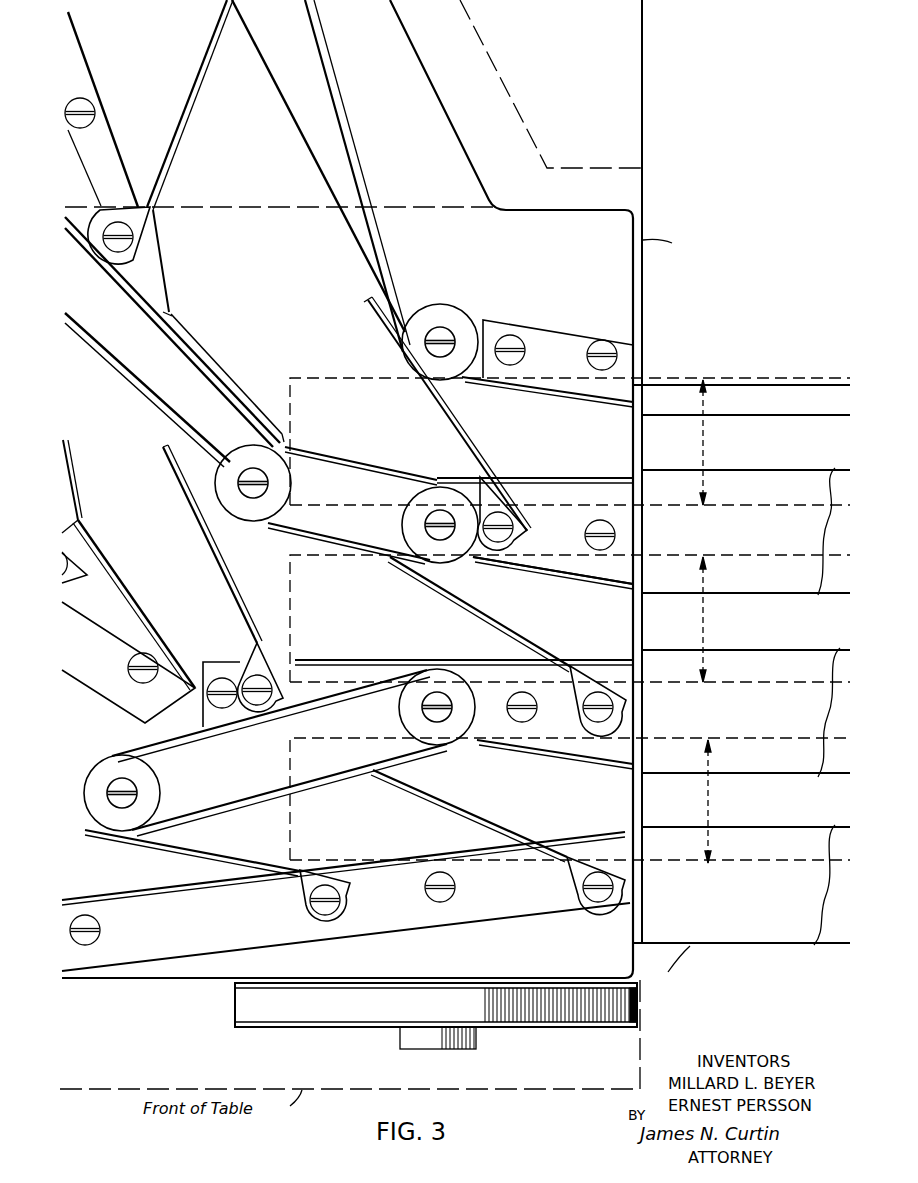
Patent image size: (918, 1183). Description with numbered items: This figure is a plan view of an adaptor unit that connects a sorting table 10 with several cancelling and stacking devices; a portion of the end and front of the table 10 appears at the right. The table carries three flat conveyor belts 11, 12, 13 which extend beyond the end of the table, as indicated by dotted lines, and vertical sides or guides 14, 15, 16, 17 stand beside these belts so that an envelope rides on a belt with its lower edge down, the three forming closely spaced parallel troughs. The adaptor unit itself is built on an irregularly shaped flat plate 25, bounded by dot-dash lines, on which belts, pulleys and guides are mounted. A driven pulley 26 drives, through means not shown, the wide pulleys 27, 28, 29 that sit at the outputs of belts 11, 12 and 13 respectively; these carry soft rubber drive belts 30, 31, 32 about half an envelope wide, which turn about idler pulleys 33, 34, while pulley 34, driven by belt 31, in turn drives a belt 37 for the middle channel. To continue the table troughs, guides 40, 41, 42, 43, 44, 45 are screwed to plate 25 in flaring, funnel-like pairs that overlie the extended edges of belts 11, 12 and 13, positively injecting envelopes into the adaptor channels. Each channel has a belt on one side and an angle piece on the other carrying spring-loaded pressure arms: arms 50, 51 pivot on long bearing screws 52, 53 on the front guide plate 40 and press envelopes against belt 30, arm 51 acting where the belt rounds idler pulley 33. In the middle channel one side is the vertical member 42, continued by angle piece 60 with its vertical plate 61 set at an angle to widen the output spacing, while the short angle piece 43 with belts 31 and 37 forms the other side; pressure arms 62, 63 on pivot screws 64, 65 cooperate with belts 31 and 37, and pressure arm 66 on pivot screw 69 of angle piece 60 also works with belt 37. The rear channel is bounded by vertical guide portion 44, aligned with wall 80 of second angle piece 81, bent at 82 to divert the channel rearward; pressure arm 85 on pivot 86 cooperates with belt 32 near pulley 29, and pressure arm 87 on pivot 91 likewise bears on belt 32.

The sorting table 10 is at (752, 178).
The flat conveyor belt 11 is at (290, 826).
The flat conveyor belt 12 is at (290, 555).
The flat conveyor belt 13 is at (290, 378).
The vertical side guide 14 is at (806, 935).
The vertical side guide 15 is at (826, 712).
The vertical side guide 16 is at (812, 570).
The vertical side guide 17 is at (746, 400).
The flat plate 25 is at (465, 158).
The driven pulley 26 is at (600, 1024).
The pulley 27 is at (452, 677).
The pulley 28 is at (462, 563).
The pulley 29 is at (462, 320).
The drive belt 30 is at (348, 775).
The drive belt 31 is at (340, 540).
The drive belt 32 is at (306, 147).
The idler pulley 33 is at (127, 828).
The idler pulley 34 is at (228, 462).
The belt 37 is at (153, 423).
The front guide plate 40 is at (565, 846).
The guide 41 is at (550, 757).
The vertical member of angle piece 42 is at (592, 660).
The short angle piece 43 is at (563, 588).
The vertical guide portion 44 is at (575, 475).
The guide 45 is at (564, 392).
The pressure arm 50 is at (482, 820).
The pressure arm 51 is at (220, 860).
The bearing screw 52 is at (340, 905).
The bearing screw 53 is at (592, 900).
The angle piece 60 is at (100, 655).
The vertically disposed plate 61 is at (135, 602).
The pressure arm 62 is at (498, 625).
The pressure arm 63 is at (222, 562).
The pivot screw 64 is at (597, 722).
The pivot screw 65 is at (257, 705).
The pressure arm 66 is at (78, 513).
The pivot screw 69 is at (81, 568).
The wall 80 is at (202, 346).
The second angle piece 81 is at (103, 140).
The bend 82 is at (172, 312).
The pressure arm 85 is at (478, 456).
The pivot 86 is at (522, 535).
The pressure arm 87 is at (188, 115).
The pivot 91 is at (120, 243).